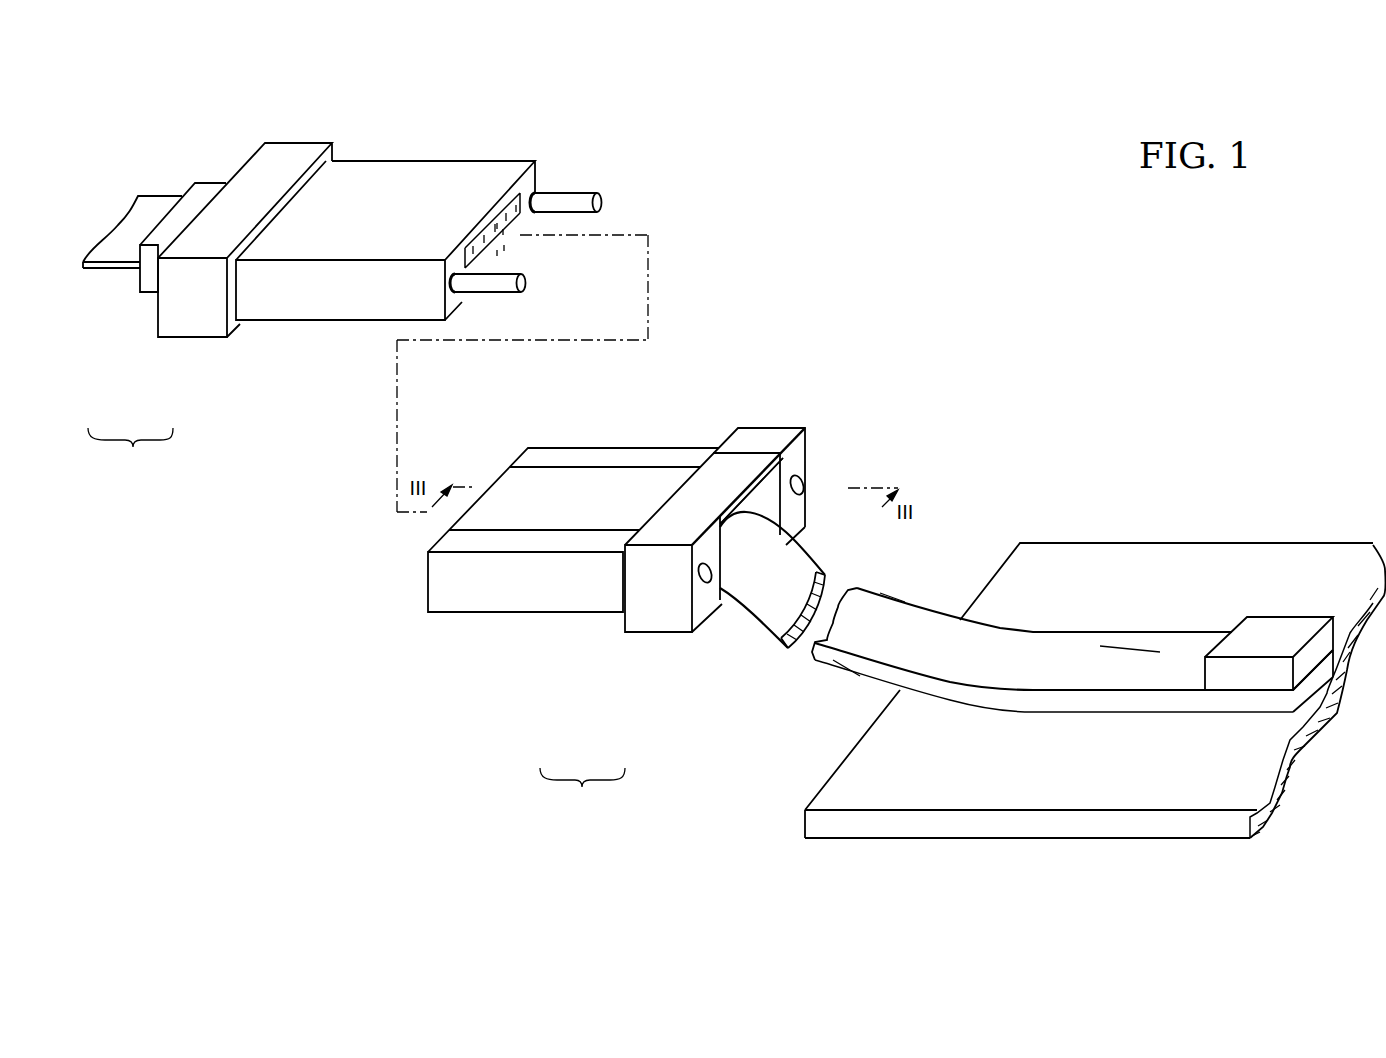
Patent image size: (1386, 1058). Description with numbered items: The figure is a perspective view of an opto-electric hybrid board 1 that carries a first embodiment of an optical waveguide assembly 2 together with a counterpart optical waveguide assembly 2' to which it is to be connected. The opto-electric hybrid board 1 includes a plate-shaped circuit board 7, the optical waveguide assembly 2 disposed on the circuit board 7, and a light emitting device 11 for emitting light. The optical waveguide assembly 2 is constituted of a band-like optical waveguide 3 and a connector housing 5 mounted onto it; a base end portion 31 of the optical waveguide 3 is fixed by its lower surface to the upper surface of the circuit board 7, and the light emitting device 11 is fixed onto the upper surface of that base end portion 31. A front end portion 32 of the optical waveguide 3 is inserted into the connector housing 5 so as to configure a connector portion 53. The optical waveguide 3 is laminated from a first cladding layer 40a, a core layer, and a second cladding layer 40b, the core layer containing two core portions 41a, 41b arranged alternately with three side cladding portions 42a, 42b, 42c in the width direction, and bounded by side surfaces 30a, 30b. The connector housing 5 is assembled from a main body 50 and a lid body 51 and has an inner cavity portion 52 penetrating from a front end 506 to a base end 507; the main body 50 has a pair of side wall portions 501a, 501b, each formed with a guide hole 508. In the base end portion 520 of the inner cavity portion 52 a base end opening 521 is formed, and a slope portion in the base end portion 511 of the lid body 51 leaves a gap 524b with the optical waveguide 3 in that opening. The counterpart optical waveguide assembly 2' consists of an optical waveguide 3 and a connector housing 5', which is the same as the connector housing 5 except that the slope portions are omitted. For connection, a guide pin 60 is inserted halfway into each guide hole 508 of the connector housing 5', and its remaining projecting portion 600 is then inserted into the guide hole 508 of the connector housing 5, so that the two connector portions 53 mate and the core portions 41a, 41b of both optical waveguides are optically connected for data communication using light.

The opto-electric hybrid board 1 is at (1108, 372).
The optical waveguide assembly 2 is at (582, 792).
The optical waveguide assembly (counterpart body) 2' is at (130, 451).
The optical waveguide 3 is at (124, 252).
The connector housing 5 is at (555, 699).
The connector housing (of counterpart assembly) 5' is at (242, 286).
The circuit board 7 is at (983, 795).
The light emitting device 11 is at (1272, 637).
The side surface 30a is at (833, 660).
The side surface 30b is at (880, 593).
The base end portion 31 is at (1153, 668).
The front end portion 32 is at (724, 537).
The first cladding layer 40a is at (470, 247).
The second cladding layer 40b is at (490, 228).
The core portion 41a is at (505, 248).
The core portion 41b is at (505, 233).
The side cladding portion 42a is at (498, 253).
The side cladding portion 42b is at (498, 226).
The side cladding portion 42c is at (520, 213).
The main body 50 is at (493, 162).
The lid body 51 is at (543, 480).
The inner cavity portion 52 is at (785, 518).
The connector portion 53 is at (380, 150).
The guide pin 60 is at (613, 184).
The side wall portion 501a is at (473, 592).
The side wall portion 501b is at (623, 460).
The front end 506 is at (428, 588).
The base end 507 is at (700, 625).
The guide hole 508 is at (537, 197).
The base end portion (of lid body back surface) 511 is at (699, 485).
The base end portion (of inner cavity portion) 520 is at (770, 505).
The base end opening 521 is at (795, 437).
The gap 524b is at (738, 522).
The projecting portion 600 is at (570, 200).